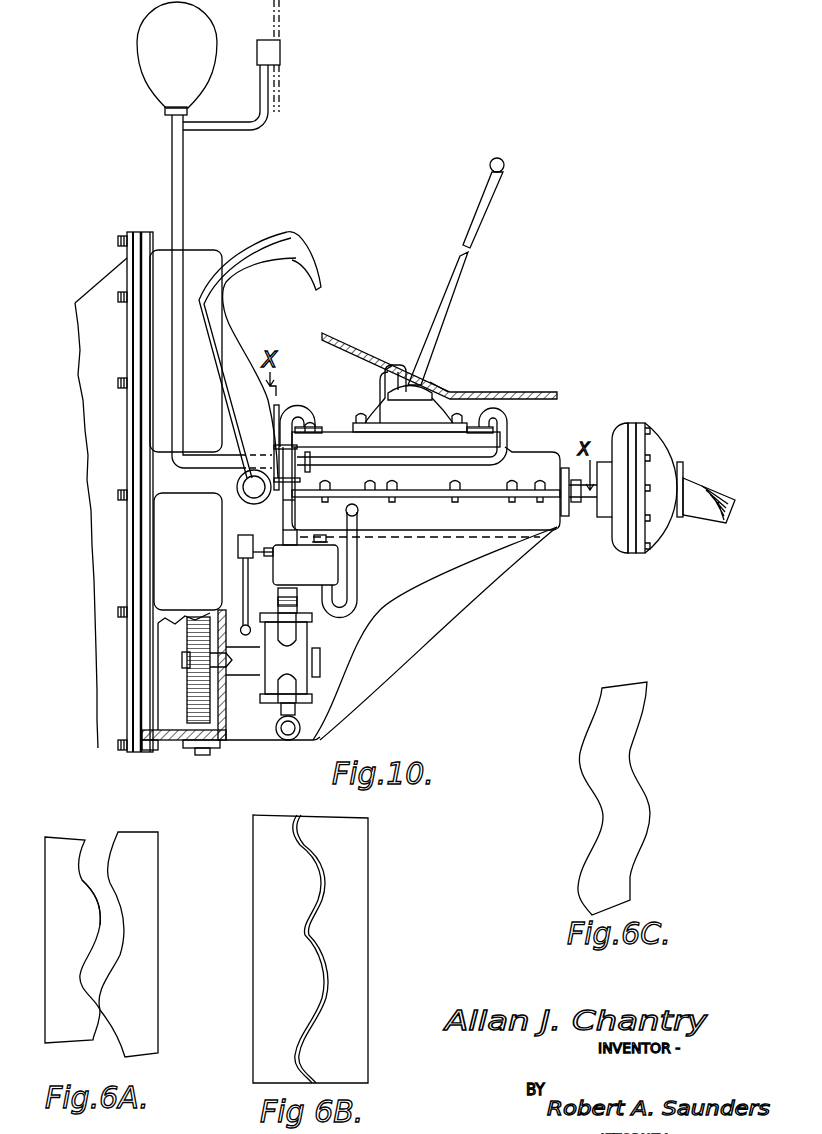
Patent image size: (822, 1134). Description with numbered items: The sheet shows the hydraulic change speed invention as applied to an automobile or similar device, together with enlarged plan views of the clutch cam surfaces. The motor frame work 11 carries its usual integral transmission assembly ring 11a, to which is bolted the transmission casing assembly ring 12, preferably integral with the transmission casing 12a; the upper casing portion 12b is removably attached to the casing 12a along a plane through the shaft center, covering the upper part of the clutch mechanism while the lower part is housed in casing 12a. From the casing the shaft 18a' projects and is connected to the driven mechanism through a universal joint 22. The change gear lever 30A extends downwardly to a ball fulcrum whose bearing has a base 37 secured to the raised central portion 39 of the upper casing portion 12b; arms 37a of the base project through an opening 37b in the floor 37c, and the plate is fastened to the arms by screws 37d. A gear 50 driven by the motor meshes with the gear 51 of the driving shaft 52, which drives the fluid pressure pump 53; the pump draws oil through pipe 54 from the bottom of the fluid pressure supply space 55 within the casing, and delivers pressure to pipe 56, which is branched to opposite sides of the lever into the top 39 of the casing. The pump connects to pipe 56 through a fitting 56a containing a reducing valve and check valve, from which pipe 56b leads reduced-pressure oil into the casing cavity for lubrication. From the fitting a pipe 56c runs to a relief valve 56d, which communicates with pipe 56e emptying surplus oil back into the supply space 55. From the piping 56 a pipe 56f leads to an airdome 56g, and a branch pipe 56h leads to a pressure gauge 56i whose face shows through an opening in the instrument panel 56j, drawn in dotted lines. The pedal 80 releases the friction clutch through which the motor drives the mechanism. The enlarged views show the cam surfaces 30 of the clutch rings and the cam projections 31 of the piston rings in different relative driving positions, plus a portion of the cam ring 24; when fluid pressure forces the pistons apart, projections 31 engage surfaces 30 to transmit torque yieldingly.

In FIG. 10, the motor frame work 11 is at (90, 326).
In FIG. 10, the transmission assembly ring 11a is at (125, 257).
In FIG. 10, the transmission casing assembly ring 12 is at (146, 236).
In FIG. 10, the transmission casing 12a is at (402, 602).
In FIG. 10, the upper casing portion 12b is at (526, 461).
In FIG. 10, the shaft 18a' is at (577, 507).
In FIG. 10, the universal joint 22 is at (656, 455).
In FIG. 6C, the cam ring 24 is at (602, 730).
In FIG. 6A, the cam surfaces 30 is at (57, 913).
In FIG. 6B, the cam surfaces 30 is at (264, 856).
In FIG. 10, the change gear lever 30A is at (452, 299).
In FIG. 6A, the cam projections 31 is at (110, 886).
In FIG. 6B, the cam projections 31 is at (300, 826).
In FIG. 10, the base 37 is at (424, 420).
In FIG. 10, the arms 37a is at (380, 392).
In FIG. 10, the opening 37b is at (390, 365).
In FIG. 10, the floor 37c is at (522, 391).
In FIG. 10, the screws 37d is at (446, 376).
In FIG. 10, the raised central portion 39 is at (388, 430).
In FIG. 10, the gear 50 is at (194, 700).
In FIG. 10, the gear 51 is at (188, 668).
In FIG. 10, the driving shaft 52 is at (239, 655).
In FIG. 10, the fluid pressure pump 53 is at (302, 640).
In FIG. 10, the pipe 54 is at (277, 725).
In FIG. 10, the fluid pressure supply space 55 is at (247, 734).
In FIG. 10, the pipe 56 is at (298, 413).
In FIG. 10, the fitting 56a is at (336, 565).
In FIG. 10, the pipe 56b is at (358, 598).
In FIG. 10, the pipe 56c is at (289, 512).
In FIG. 10, the relief valve 56d is at (237, 550).
In FIG. 10, the pipe 56e is at (251, 573).
In FIG. 10, the pipe 56f is at (172, 160).
In FIG. 10, the airdome 56g is at (160, 47).
In FIG. 10, the branch pipe 56h is at (236, 130).
In FIG. 10, the pressure gauge 56i is at (281, 52).
In FIG. 10, the instrument panel 56j is at (281, 22).
In FIG. 10, the pedal 80 is at (250, 262).